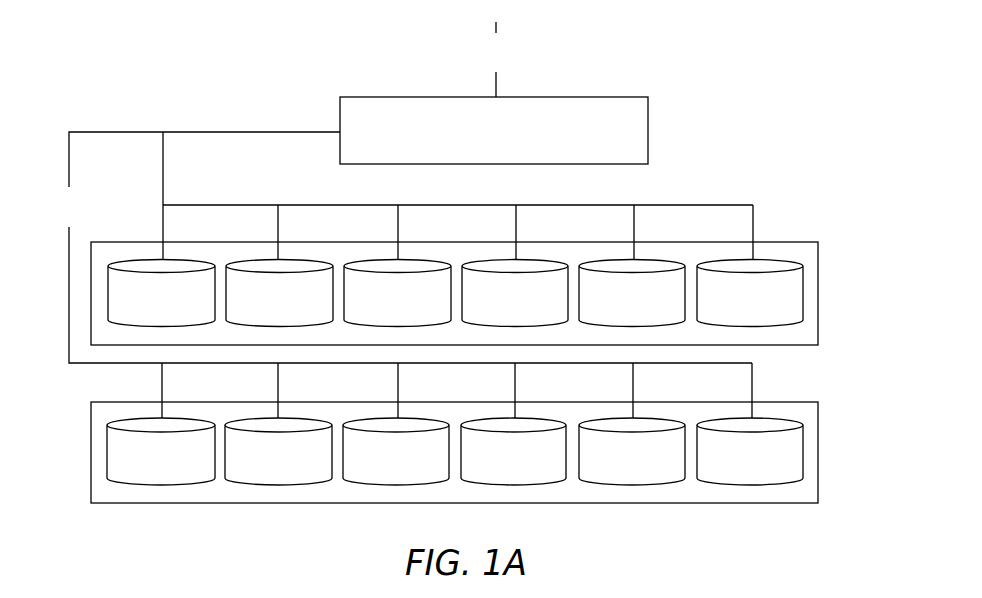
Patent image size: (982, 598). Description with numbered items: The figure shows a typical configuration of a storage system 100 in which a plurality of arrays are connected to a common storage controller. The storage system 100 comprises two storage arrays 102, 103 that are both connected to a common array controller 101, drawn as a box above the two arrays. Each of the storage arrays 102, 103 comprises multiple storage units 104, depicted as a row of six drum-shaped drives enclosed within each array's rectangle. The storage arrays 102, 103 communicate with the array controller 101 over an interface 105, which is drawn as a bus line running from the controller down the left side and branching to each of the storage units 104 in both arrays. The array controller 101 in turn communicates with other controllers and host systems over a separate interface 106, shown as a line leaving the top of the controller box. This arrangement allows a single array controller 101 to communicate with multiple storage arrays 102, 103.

The storage system 100 is at (193, 56).
The array controller 101 is at (578, 86).
The storage array 102 is at (790, 229).
The storage array 103 is at (499, 443).
The storage unit 104 is at (142, 491).
The interface 105 is at (401, 247).
The interface 106 is at (497, 59).